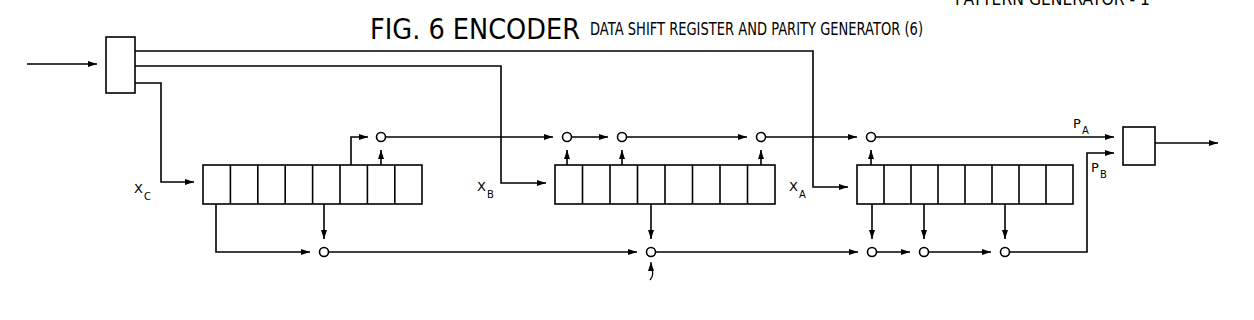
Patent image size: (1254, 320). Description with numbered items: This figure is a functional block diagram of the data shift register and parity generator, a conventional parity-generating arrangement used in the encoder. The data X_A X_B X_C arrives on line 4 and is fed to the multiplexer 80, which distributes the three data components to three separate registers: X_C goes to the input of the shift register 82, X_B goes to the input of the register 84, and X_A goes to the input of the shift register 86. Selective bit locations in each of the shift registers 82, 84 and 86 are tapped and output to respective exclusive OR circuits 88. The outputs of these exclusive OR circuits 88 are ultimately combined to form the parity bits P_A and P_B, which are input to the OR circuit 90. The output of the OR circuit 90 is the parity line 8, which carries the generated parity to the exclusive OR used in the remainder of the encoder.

The line 4 is at (55, 69).
The multiplexer 80 is at (118, 95).
The shift register 82 is at (294, 164).
The register 84 is at (703, 165).
The shift register 86 is at (950, 165).
The exclusive OR circuits 88 is at (384, 132).
The OR circuit 90 is at (1137, 126).
The line 8 is at (1190, 146).